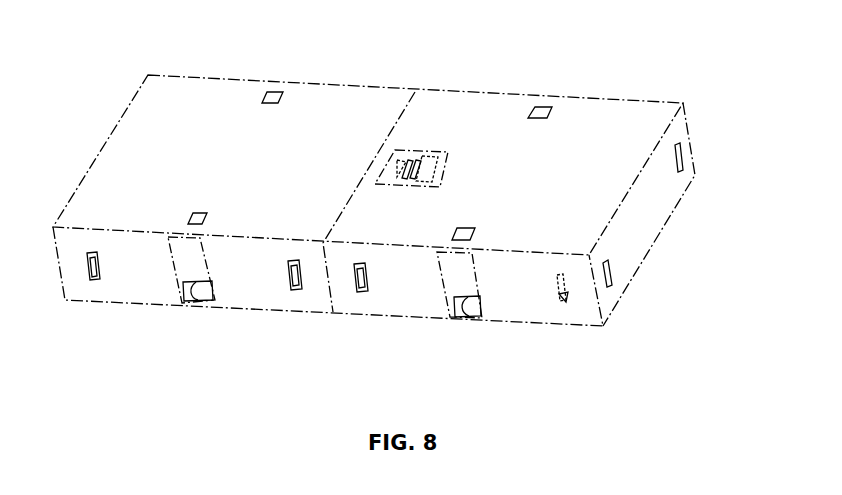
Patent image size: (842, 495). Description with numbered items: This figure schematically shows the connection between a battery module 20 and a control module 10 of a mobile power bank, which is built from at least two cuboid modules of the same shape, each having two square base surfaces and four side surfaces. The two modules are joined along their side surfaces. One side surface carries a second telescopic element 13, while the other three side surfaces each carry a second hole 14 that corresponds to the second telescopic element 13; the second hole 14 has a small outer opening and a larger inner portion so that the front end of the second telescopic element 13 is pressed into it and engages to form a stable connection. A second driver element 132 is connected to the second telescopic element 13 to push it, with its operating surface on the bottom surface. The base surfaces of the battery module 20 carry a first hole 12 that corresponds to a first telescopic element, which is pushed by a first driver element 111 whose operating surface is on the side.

The control module 10 is at (122, 100).
The first hole 12 is at (200, 213).
The second telescopic element 13 is at (420, 161).
The second driver element 132 is at (390, 151).
The second hole 14 is at (678, 153).
The battery module 20 is at (657, 256).
The first driver element 111 is at (205, 308).